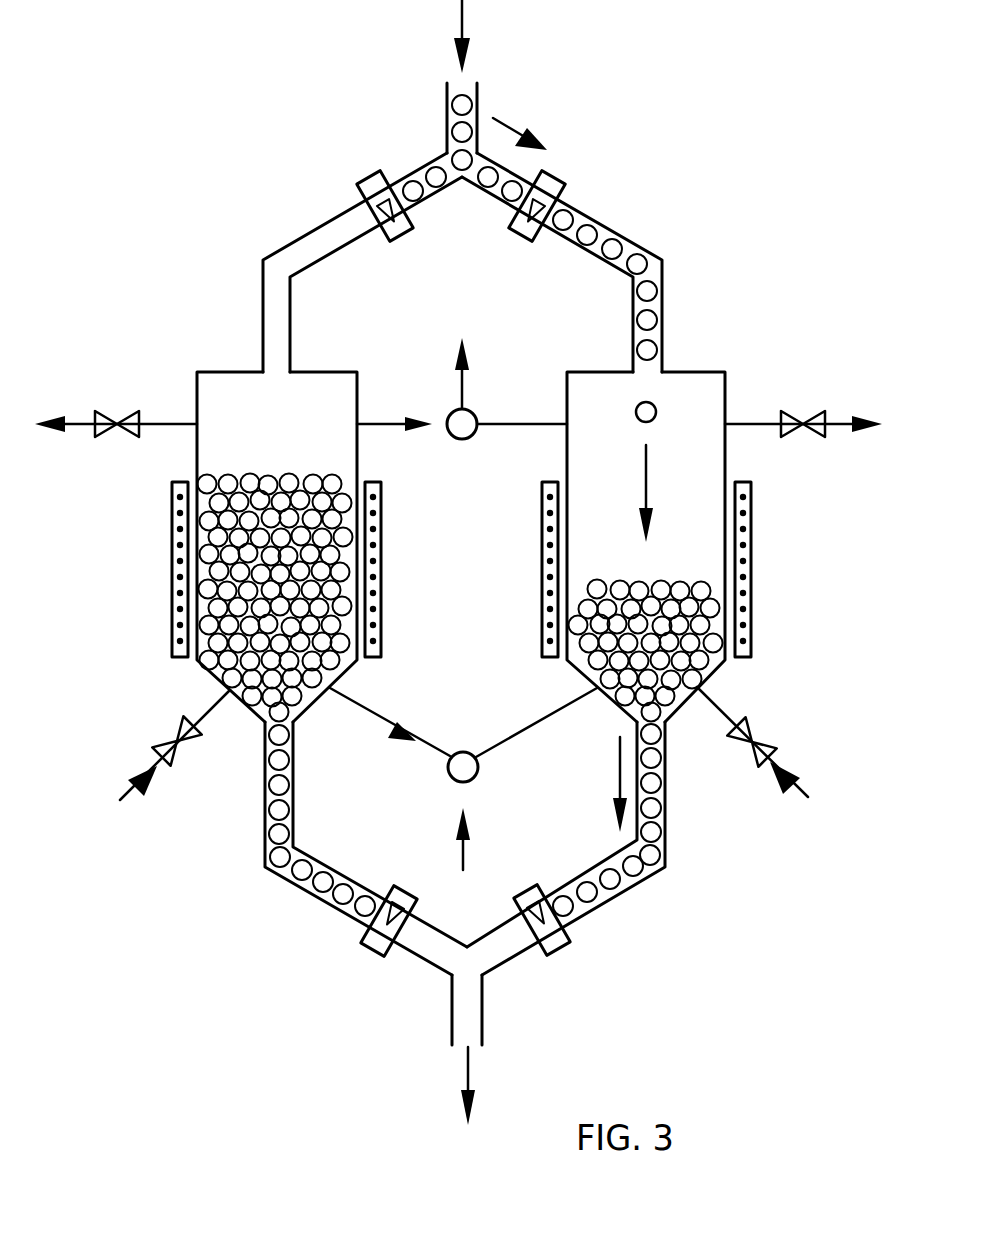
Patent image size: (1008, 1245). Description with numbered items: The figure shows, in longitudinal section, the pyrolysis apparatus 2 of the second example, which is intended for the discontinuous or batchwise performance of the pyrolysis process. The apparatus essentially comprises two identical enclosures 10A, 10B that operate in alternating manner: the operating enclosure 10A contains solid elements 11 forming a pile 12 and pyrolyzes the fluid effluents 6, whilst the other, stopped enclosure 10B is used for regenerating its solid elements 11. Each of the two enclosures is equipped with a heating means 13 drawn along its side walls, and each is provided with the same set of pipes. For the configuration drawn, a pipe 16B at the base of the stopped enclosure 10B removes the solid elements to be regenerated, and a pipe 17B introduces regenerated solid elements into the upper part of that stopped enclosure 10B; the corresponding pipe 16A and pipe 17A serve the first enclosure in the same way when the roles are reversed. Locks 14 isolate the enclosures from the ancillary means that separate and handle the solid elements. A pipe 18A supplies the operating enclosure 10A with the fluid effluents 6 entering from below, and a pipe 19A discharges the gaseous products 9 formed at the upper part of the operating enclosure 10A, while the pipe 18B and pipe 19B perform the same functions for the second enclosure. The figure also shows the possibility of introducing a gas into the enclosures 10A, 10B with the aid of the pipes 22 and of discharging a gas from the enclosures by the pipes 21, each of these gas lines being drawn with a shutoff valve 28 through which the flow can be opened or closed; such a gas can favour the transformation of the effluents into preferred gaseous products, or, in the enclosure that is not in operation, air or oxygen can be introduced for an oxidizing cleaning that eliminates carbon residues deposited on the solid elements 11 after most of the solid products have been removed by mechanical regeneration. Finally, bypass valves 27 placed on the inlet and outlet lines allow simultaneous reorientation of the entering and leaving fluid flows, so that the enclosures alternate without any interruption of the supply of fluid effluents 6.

The pyrolysis apparatus 2 is at (195, 908).
The fluid effluents 6 is at (463, 859).
The gaseous products 9 is at (462, 352).
The operating enclosure 10A is at (196, 452).
The stopped enclosure 10B is at (728, 450).
The solid elements 11 is at (660, 573).
The pile 12 is at (233, 473).
The heating means 13 is at (168, 603).
The locks 14 is at (355, 191).
The pipe for removing solid elements 16A is at (348, 913).
The pipe for removing solid elements to be regenerated 16B is at (587, 913).
The pipe for introducing regenerated solid elements 17A is at (440, 193).
The pipe for introducing regenerated solid elements 17B is at (488, 193).
The pipe for supplying fluid effluents 18A is at (352, 712).
The pipe for supplying fluid effluents 18B is at (563, 712).
The pipe for discharging gaseous products 19A is at (394, 408).
The pipe for discharging gaseous products 19B is at (522, 403).
The gas discharge pipes 21 is at (85, 420).
The gas introduction pipes 22 is at (138, 797).
The bypass valves 27 is at (470, 440).
The shutoff valves 28 is at (112, 412).